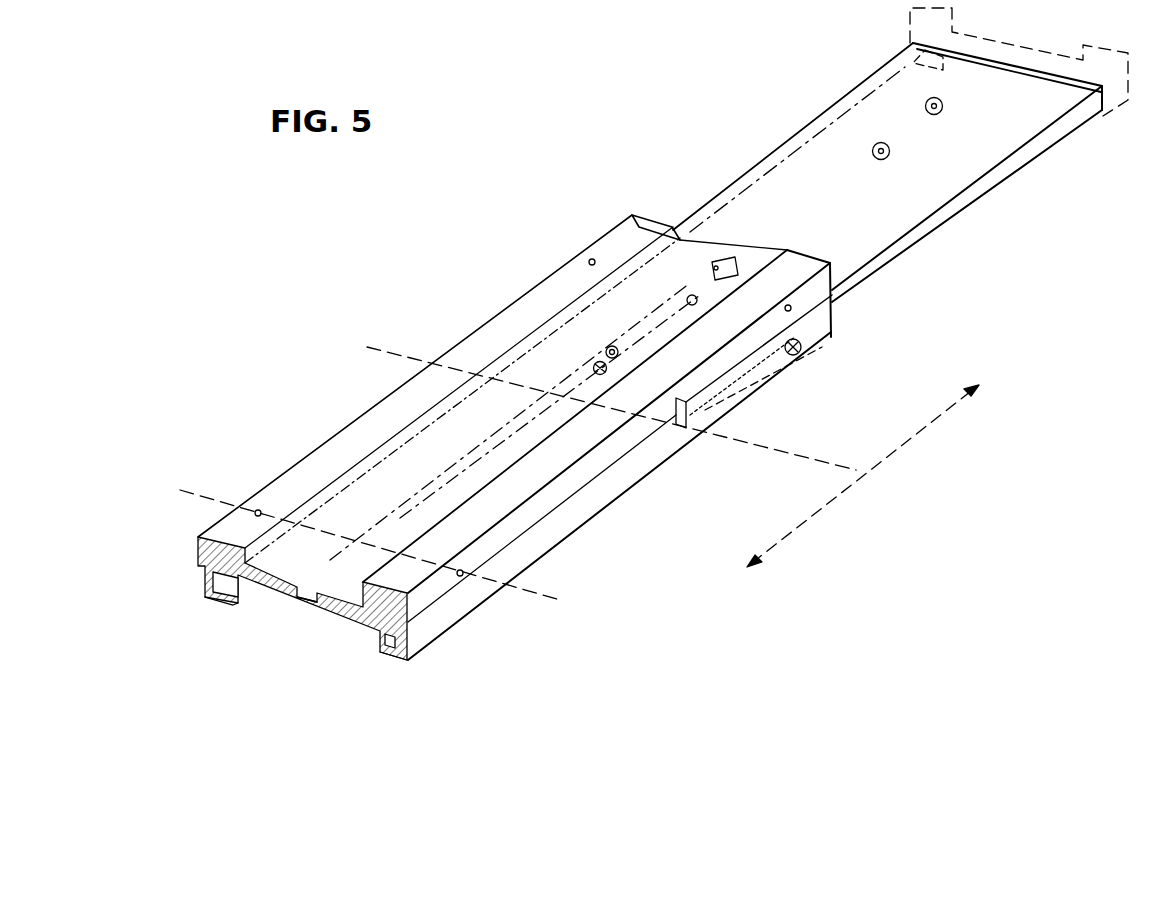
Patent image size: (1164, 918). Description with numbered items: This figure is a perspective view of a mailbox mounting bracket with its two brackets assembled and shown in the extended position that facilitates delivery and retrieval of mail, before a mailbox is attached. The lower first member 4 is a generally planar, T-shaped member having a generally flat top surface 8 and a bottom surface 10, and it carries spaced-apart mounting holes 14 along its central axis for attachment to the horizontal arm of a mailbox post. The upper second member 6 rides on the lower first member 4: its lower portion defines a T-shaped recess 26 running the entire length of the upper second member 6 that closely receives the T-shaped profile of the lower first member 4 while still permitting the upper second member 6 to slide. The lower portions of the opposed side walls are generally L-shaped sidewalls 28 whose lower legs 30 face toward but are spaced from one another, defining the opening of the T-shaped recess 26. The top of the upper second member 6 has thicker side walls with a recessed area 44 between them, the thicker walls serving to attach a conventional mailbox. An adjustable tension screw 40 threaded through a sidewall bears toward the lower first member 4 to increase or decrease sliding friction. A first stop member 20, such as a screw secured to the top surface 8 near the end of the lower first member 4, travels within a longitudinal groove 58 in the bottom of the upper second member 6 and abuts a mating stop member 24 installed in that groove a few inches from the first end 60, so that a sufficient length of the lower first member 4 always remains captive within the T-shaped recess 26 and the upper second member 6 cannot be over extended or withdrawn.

The lower first member 4 is at (963, 202).
The upper second member 6 is at (517, 534).
The top surface 8 is at (826, 174).
The bottom surface 10 is at (903, 263).
The mounting holes 14 is at (893, 147).
The first stop member 20 is at (602, 380).
The mating stop member 24 is at (612, 346).
The T-shaped recess 26 is at (374, 631).
The L-shaped sidewalls 28 is at (546, 278).
The lower legs 30 is at (225, 597).
The adjustable tension screw 40 is at (802, 347).
The recessed area 44 is at (395, 498).
The longitudinal groove 58 is at (307, 600).
The first end 60 is at (648, 220).